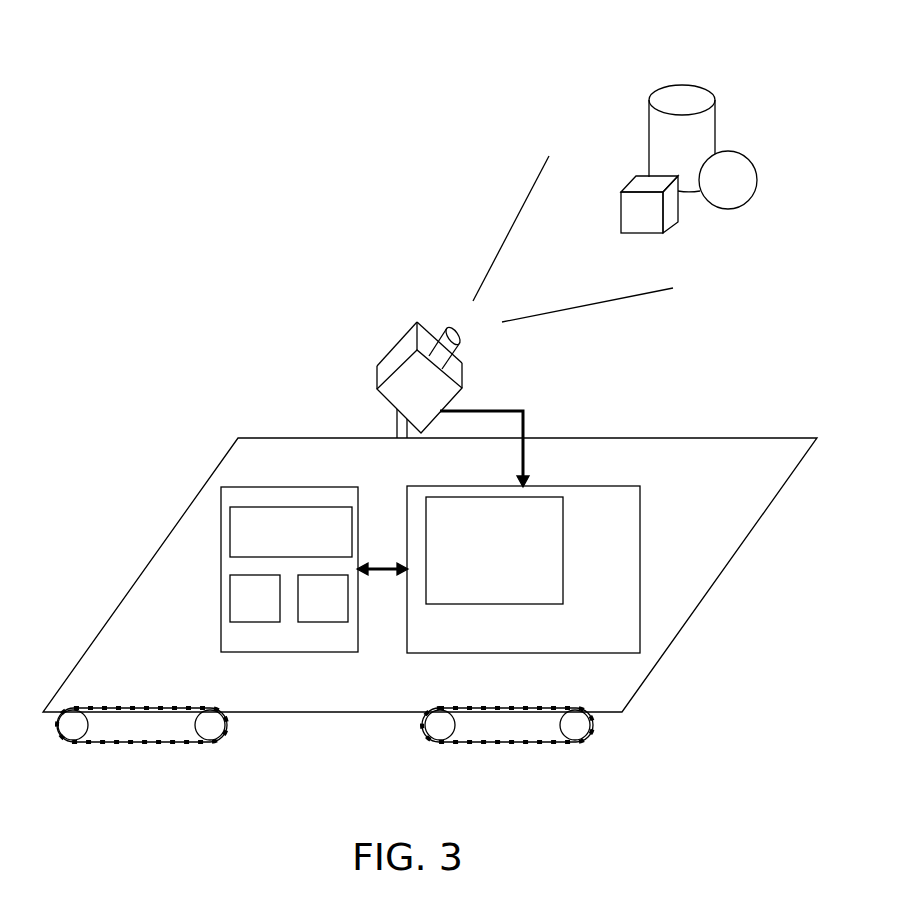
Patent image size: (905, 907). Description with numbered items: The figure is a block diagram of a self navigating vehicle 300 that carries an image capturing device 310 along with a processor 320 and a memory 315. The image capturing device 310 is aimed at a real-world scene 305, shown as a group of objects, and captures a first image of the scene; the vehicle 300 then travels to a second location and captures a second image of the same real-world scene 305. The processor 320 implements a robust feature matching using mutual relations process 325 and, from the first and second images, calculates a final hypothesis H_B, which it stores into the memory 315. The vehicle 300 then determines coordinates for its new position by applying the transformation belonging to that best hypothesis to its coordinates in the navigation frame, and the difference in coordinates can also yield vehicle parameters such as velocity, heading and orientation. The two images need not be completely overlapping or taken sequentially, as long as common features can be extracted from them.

The self navigating vehicle 300 is at (330, 712).
The real-world scene 305 is at (772, 144).
The image capturing device 310 is at (395, 343).
The memory 315 is at (302, 653).
The processor 320 is at (523, 591).
The robust feature matching using mutual relations process 325 is at (564, 562).